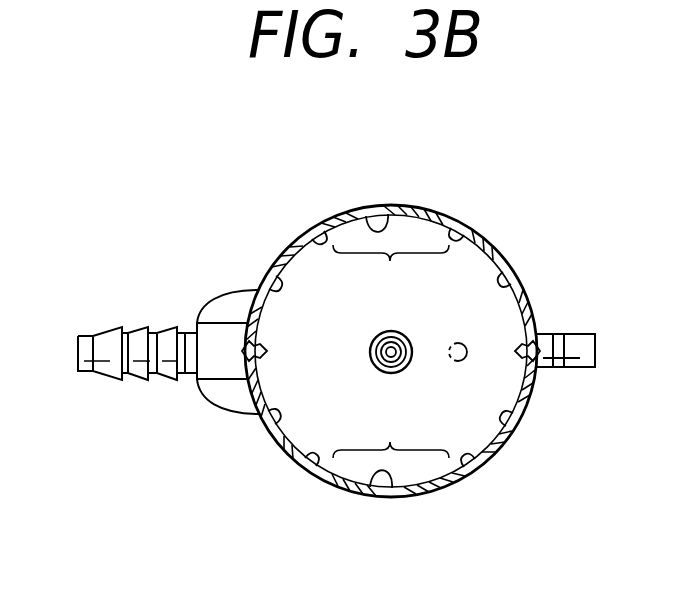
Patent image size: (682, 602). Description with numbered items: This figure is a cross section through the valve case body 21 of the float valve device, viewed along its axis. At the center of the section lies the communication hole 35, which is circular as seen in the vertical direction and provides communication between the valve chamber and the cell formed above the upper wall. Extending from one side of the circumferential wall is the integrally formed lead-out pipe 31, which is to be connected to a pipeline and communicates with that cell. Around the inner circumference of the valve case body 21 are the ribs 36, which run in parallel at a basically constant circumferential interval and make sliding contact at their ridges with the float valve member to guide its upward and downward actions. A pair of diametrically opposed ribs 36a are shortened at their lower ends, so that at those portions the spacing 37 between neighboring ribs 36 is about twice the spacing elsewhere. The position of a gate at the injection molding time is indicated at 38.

The valve case body 21 is at (230, 252).
The lead-out pipe 31 is at (115, 333).
The communication hole 35 is at (371, 337).
The ribs 36 is at (302, 243).
The diametrically opposed ribs 36a is at (370, 225).
The spacing of the ribs 37 is at (391, 351).
The position of a gate 38 is at (458, 343).